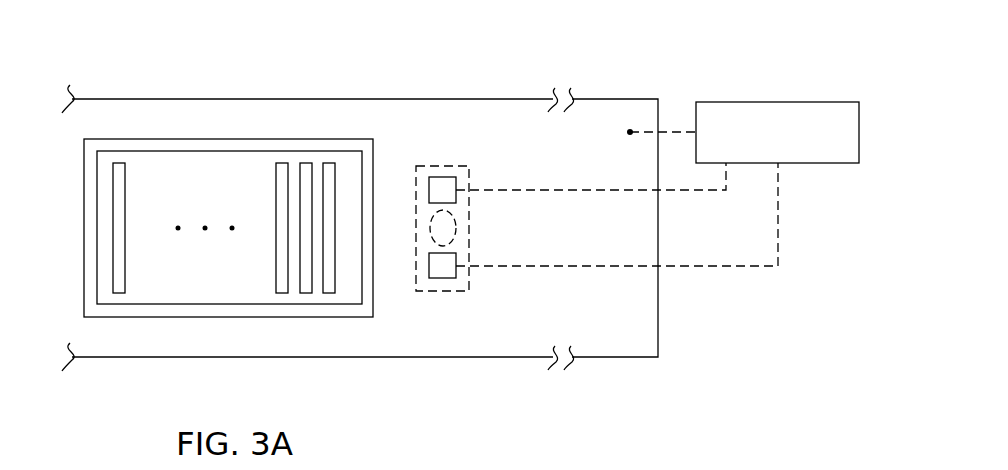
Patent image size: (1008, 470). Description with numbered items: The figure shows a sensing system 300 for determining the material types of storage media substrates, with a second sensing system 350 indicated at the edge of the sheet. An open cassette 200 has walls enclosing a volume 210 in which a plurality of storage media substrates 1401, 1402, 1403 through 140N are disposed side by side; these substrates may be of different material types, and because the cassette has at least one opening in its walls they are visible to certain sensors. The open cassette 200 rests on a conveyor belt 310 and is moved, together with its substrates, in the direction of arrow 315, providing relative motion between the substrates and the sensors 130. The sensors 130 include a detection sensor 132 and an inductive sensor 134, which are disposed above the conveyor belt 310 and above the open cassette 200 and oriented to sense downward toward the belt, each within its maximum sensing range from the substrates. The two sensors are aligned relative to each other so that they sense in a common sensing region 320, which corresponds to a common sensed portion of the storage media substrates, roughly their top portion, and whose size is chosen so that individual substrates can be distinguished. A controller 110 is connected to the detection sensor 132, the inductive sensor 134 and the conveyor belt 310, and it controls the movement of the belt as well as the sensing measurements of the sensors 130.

The sensing system 300 is at (680, 54).
The open cassette 200 is at (250, 115).
The volume 210 is at (190, 167).
The storage media substrate 140N is at (120, 304).
The storage media substrate 1403 is at (279, 306).
The storage media substrate 1402 is at (306, 306).
The storage media substrate 1401 is at (330, 306).
The arrow 315 is at (225, 326).
The conveyor belt 310 is at (414, 125).
The sensors 130 is at (444, 291).
The detection sensor 132 is at (442, 177).
The common sensing region 320 is at (448, 212).
The inductive sensor 134 is at (456, 258).
The controller 110 is at (797, 155).
The sensing system 350 is at (752, 469).